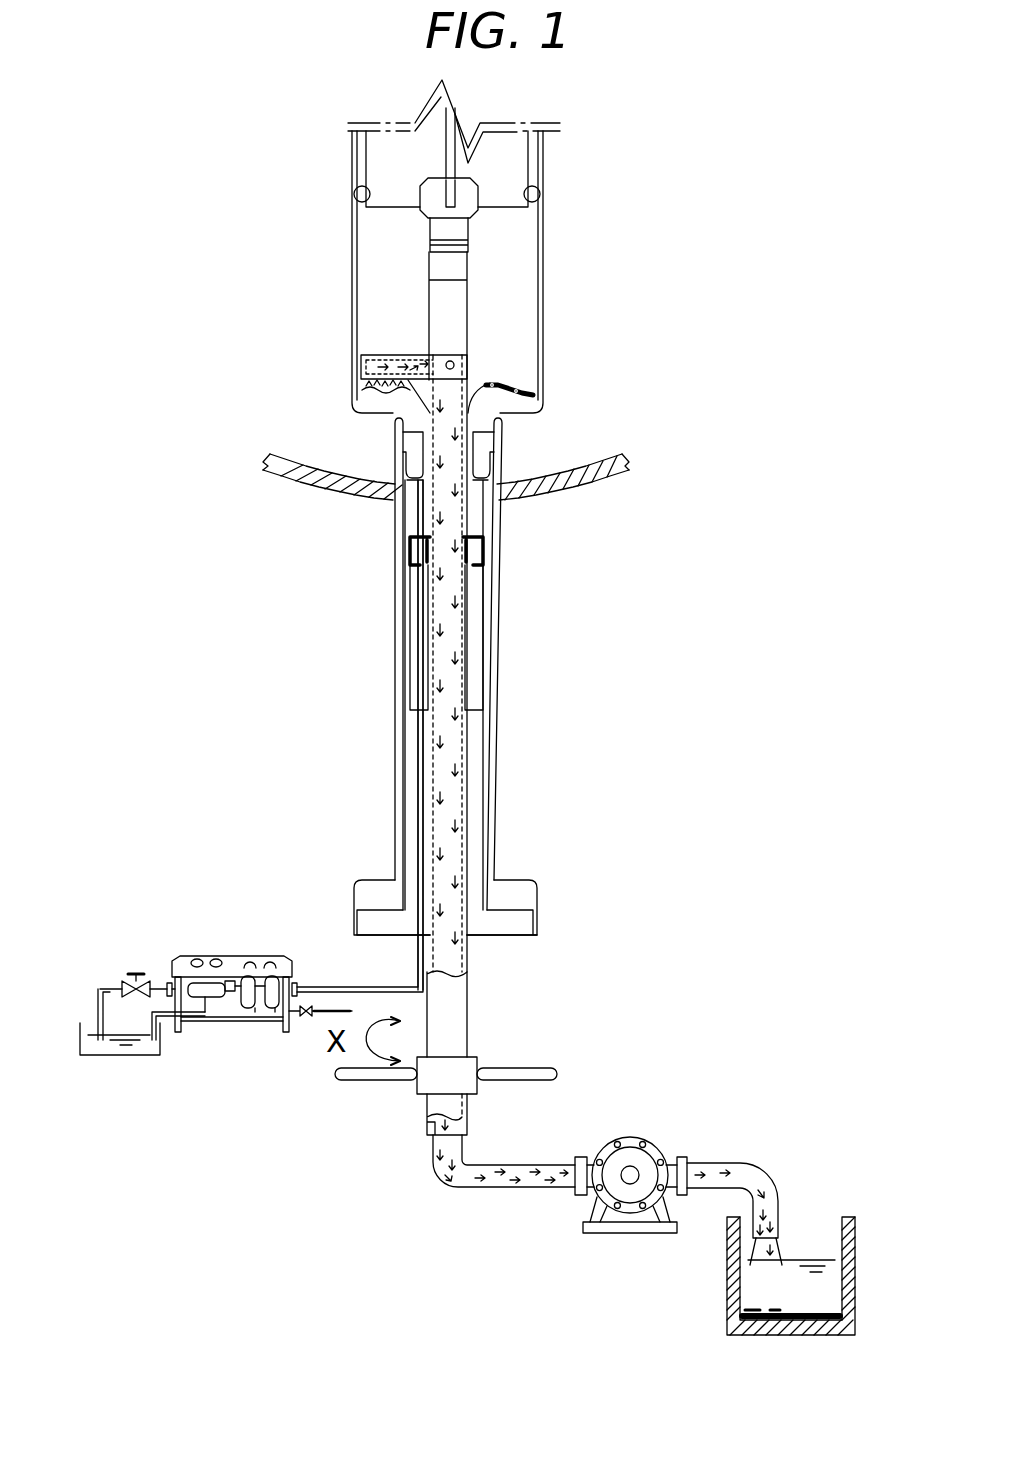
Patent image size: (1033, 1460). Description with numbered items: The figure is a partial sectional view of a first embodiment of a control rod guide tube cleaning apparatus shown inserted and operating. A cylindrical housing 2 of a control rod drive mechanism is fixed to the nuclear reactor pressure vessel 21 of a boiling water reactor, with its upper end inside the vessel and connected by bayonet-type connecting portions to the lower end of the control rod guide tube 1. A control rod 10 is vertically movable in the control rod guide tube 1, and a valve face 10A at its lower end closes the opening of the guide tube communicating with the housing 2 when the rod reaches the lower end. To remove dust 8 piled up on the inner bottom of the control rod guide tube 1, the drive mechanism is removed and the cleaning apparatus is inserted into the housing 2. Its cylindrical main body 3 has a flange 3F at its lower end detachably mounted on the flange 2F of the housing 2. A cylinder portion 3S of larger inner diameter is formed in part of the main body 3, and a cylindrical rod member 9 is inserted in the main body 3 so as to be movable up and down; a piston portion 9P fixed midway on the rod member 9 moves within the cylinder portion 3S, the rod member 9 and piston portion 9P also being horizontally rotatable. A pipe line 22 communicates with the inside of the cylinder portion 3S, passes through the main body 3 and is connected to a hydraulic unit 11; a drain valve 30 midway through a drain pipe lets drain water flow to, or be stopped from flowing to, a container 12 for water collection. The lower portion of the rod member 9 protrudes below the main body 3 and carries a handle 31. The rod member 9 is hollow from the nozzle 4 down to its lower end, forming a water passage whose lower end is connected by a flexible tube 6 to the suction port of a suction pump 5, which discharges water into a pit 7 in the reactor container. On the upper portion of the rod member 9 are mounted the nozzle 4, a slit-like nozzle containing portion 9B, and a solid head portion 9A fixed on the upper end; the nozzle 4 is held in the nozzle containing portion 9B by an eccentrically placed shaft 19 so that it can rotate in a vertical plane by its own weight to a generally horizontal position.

The control rod guide tube 1 is at (543, 313).
The housing 2 is at (496, 523).
The flange 2F is at (540, 888).
The main body 3 is at (418, 519).
The flange 3F is at (496, 920).
The cylinder portion 3S is at (422, 572).
The nozzle 4 is at (398, 355).
The suction pump 5 is at (640, 1140).
The flexible tube 6 is at (505, 1165).
The pit 7 is at (750, 1290).
The dust 8 is at (522, 386).
The rod member 9 is at (436, 264).
The head portion 9A is at (470, 236).
The nozzle containing portion 9B is at (437, 310).
The piston portion 9P is at (417, 550).
The control rod 10 is at (512, 160).
The valve face 10A is at (425, 210).
The hydraulic unit 11 is at (237, 955).
The container for water collection 12 is at (105, 1060).
The shaft 19 is at (452, 360).
The nuclear reactor pressure vessel 21 is at (618, 447).
The pipe line 22 is at (340, 985).
The drain valve 30 is at (136, 970).
The handle 31 is at (376, 1080).